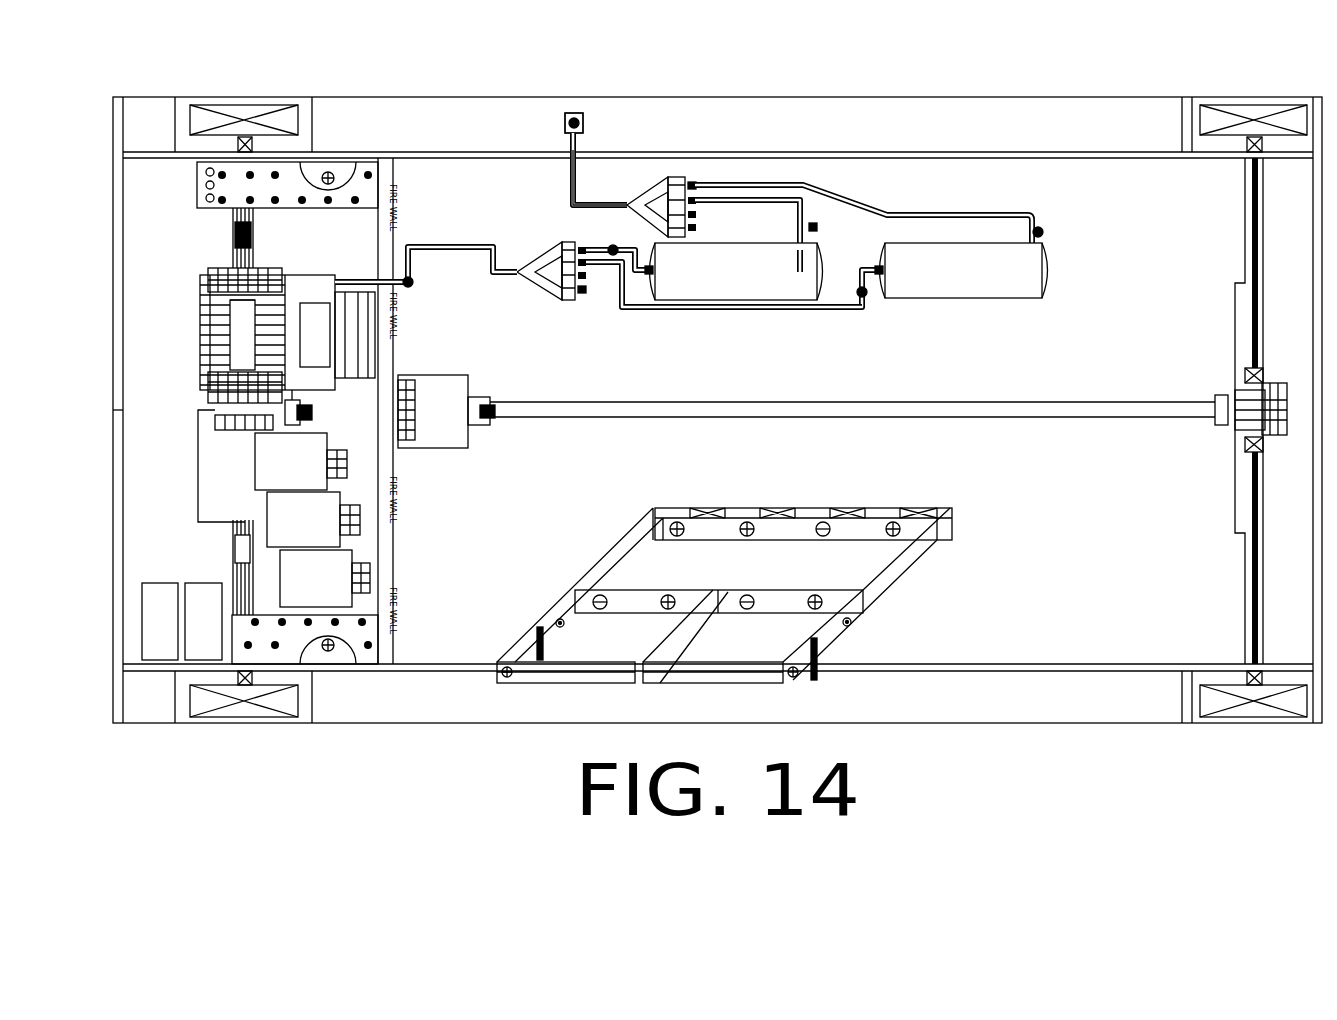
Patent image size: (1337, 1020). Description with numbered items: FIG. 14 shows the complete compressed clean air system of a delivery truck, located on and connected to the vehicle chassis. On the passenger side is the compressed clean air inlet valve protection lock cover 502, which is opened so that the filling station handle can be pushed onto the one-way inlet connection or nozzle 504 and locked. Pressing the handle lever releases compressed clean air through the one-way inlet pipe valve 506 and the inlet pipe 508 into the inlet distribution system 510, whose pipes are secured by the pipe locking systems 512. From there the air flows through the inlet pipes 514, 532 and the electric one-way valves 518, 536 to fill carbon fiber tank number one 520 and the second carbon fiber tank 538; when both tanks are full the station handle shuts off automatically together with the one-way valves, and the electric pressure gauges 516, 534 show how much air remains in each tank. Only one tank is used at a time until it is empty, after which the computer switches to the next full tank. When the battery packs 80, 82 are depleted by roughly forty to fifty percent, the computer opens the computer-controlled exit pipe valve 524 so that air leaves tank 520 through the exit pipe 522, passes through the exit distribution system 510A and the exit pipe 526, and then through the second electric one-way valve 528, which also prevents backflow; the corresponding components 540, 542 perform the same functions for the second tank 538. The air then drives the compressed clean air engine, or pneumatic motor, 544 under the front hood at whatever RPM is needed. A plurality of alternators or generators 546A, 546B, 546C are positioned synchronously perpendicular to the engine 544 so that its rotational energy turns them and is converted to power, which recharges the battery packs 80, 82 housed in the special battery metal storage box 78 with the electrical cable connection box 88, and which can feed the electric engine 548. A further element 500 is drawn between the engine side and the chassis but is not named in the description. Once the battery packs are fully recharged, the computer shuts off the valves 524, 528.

The special battery metal storage box 78 is at (880, 587).
The battery pack 80 is at (580, 675).
The battery pack 82 is at (700, 678).
The electrical cable connection box 88 is at (927, 523).
The drive shaft 500 is at (515, 415).
The compressed clean air inlet valve protection lock cover 502 is at (565, 123).
The one-way compressed clean air inlet connection 504 is at (590, 115).
The one way compressed clean air inlet pipe valve 506 is at (570, 142).
The one way compressed clean air inlet pipe 508 is at (575, 203).
The compressed clean air inlet pipe distribution system 510 is at (698, 150).
The compressed clean air exit pipe distribution system 510A is at (542, 262).
The compressed clean air pipe locking systems 512 is at (700, 182).
The compressed clean air inlet pipe 514 is at (787, 197).
The compressed clean air electric pressure gauge 516 is at (813, 225).
The compressed clean air one way air inlet valve 518 is at (820, 263).
The compressed clean air carbon fiber tank number one 520 is at (740, 287).
The compressed clean air exit pipe 522 is at (658, 307).
The computer controlled compressed clean air exit pipe valve 524 is at (613, 250).
The compressed clean air exit pipe 526 is at (452, 252).
The computer controlled compressed clean air exit pipe valve 528 is at (412, 287).
The compressed clean air inlet pipe 532 is at (1073, 192).
The compressed clean air electric pressure gauge 534 is at (1040, 233).
The electric compressed clean air one way valve 536 is at (1043, 275).
The second compressed clean air carbon fiber tank 538 is at (992, 293).
The compressed clean air exit pipe (second tank) 540 is at (870, 293).
The computer controlled compressed clean air exit pipe valve (second tank) 542 is at (837, 308).
The compressed clean air engine 544 is at (317, 380).
The alternator or generator 546A is at (267, 472).
The alternator or generator 546B is at (280, 525).
The alternator or generator 546C is at (305, 573).
The electric engine 548 is at (265, 305).